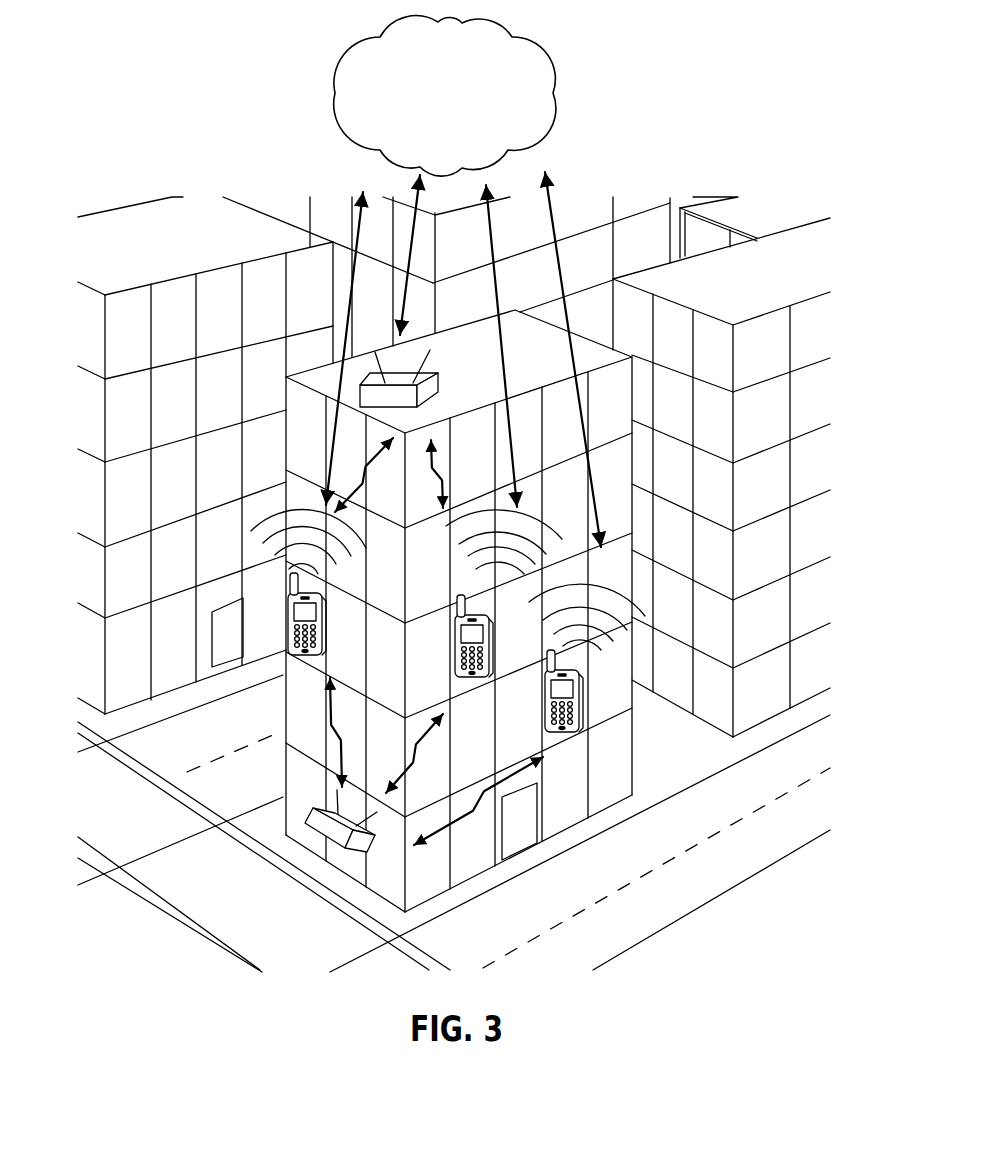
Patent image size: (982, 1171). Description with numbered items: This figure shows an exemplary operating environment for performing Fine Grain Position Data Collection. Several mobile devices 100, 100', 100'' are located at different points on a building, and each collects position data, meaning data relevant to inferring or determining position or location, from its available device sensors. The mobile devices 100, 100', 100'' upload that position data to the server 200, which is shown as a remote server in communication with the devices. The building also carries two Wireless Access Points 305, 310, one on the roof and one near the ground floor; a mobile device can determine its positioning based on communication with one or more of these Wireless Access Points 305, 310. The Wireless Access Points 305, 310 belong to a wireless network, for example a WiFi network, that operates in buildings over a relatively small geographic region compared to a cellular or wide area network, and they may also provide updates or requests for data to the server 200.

The server 200 is at (458, 117).
The Wireless Access Point 305 is at (440, 381).
The Wireless Access Point 310 is at (375, 837).
The mobile device 100 is at (308, 582).
The mobile device 100' is at (504, 593).
The mobile device 100'' is at (587, 658).